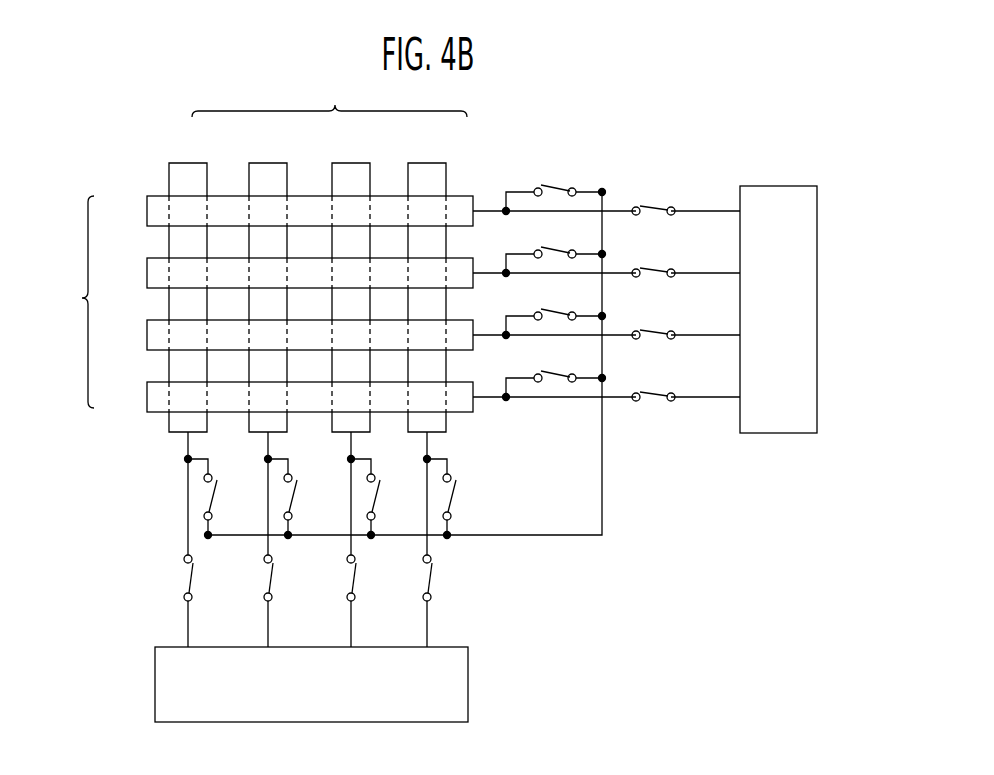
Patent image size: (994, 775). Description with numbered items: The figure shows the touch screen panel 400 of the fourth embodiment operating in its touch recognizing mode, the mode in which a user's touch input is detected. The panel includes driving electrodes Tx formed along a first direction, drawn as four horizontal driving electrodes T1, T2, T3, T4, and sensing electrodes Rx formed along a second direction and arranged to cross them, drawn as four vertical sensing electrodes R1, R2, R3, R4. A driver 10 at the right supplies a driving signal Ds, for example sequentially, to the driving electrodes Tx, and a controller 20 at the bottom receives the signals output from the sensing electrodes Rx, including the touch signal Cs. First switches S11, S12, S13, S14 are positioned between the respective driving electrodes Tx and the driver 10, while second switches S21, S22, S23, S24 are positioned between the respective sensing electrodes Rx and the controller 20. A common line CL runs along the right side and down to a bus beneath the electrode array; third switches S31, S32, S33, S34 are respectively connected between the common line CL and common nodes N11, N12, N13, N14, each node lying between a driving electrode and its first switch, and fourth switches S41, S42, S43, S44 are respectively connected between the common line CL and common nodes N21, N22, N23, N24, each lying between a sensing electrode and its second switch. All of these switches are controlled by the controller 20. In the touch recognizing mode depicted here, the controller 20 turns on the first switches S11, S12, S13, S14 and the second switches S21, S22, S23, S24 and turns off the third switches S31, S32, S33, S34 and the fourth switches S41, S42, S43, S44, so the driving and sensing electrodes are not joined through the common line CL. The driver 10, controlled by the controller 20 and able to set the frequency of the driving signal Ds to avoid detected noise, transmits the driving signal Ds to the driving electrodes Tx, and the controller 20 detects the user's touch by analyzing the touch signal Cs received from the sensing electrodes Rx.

The touch screen panel 400 is at (684, 112).
The driver 10 is at (779, 186).
The controller 20 is at (165, 647).
The sensing electrodes Rx is at (329, 99).
The driving electrodes Tx is at (74, 302).
The common line CL is at (604, 485).
The driving signal Ds is at (686, 198).
The touch signal Cs is at (196, 608).
The sensing electrode R1 is at (189, 163).
The sensing electrode R2 is at (269, 163).
The sensing electrode R3 is at (352, 163).
The sensing electrode R4 is at (428, 163).
The driving electrode T1 is at (147, 211).
The driving electrode T2 is at (147, 273).
The driving electrode T3 is at (147, 335).
The driving electrode T4 is at (147, 397).
The first switch S11 is at (653, 199).
The first switch S12 is at (653, 261).
The first switch S13 is at (653, 323).
The first switch S14 is at (653, 385).
The second switch S21 is at (206, 578).
The second switch S22 is at (286, 578).
The second switch S23 is at (369, 578).
The second switch S24 is at (445, 578).
The third switch S31 is at (556, 187).
The third switch S32 is at (556, 249).
The third switch S33 is at (556, 311).
The third switch S34 is at (556, 373).
The fourth switch S41 is at (216, 499).
The fourth switch S42 is at (296, 499).
The fourth switch S43 is at (379, 499).
The fourth switch S44 is at (455, 499).
The common node N11 is at (509, 223).
The common node N12 is at (509, 285).
The common node N13 is at (509, 347).
The common node N14 is at (509, 409).
The common node N21 is at (172, 458).
The common node N22 is at (252, 458).
The common node N23 is at (335, 458).
The common node N24 is at (411, 458).